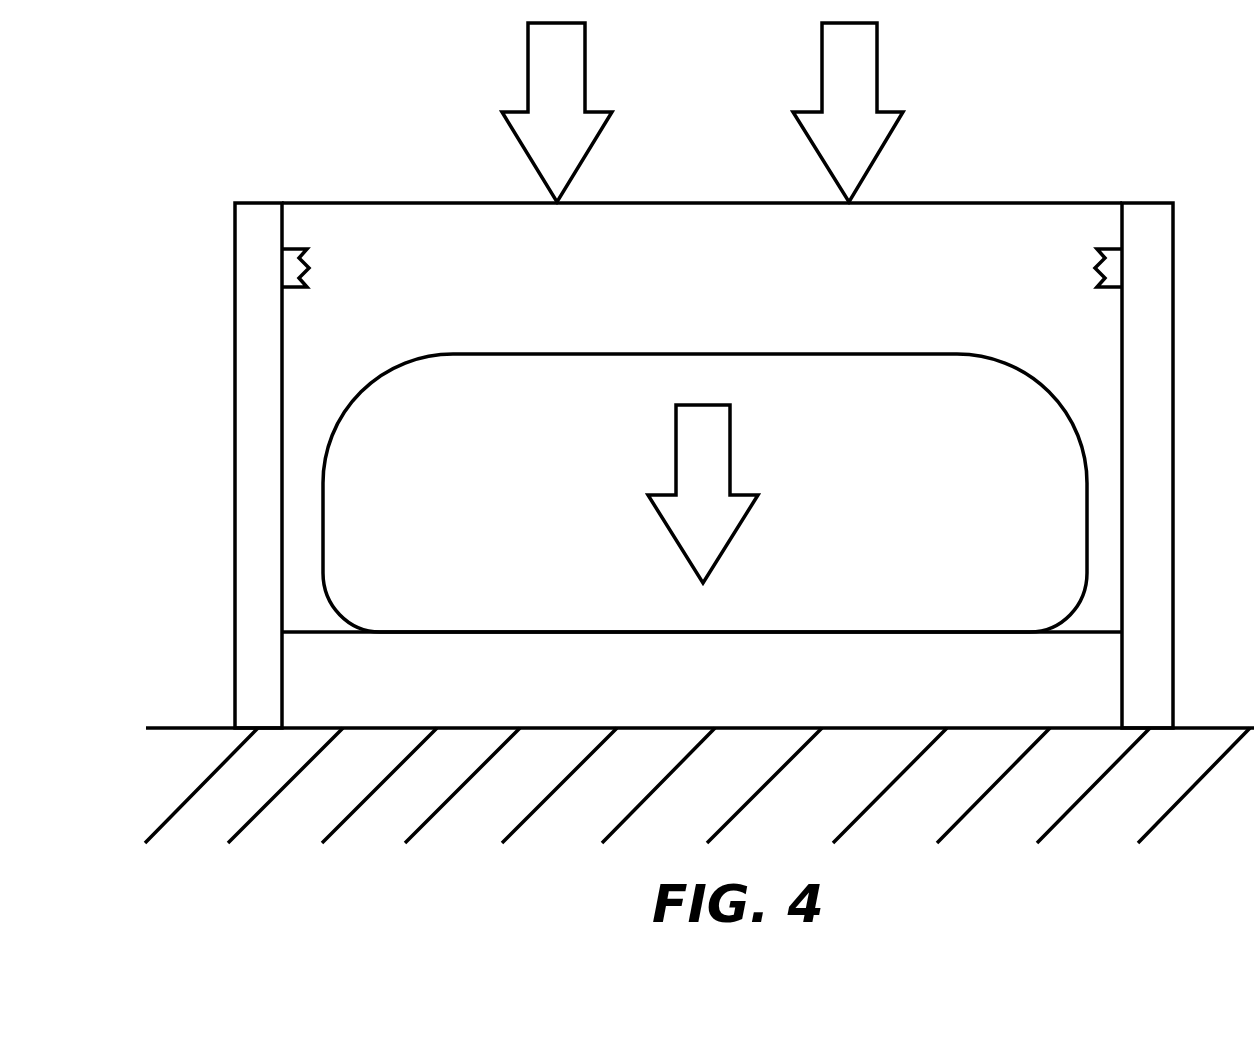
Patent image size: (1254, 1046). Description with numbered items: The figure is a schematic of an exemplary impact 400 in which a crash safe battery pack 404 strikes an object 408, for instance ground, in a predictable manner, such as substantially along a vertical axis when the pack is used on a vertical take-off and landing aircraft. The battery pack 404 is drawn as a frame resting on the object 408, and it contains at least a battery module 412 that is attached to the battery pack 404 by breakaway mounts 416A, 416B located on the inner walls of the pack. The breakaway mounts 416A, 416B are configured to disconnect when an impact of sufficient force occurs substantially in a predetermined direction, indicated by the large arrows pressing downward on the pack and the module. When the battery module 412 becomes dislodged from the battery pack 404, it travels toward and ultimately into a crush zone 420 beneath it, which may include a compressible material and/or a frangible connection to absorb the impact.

The impact 400 is at (656, 421).
The battery pack 404 is at (234, 201).
The object 408 is at (165, 726).
The battery module 412 is at (450, 352).
The breakaway mount 416A is at (312, 256).
The breakaway mount 416B is at (1094, 256).
The crush zone 420 is at (578, 631).